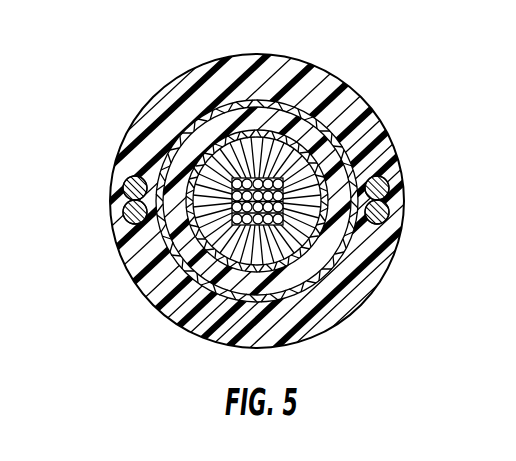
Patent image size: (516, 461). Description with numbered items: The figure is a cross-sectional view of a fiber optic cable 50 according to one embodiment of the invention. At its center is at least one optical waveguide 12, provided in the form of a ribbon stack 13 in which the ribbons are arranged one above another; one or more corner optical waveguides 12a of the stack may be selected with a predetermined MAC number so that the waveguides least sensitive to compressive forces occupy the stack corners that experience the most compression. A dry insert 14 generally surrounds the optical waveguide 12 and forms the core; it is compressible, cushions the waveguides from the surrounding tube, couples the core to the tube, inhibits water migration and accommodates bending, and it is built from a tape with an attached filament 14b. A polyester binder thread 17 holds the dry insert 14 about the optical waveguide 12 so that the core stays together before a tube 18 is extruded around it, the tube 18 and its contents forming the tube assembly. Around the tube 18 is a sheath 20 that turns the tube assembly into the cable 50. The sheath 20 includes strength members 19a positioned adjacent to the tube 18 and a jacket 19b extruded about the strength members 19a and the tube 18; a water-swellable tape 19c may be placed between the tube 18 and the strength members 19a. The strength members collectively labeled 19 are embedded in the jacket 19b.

The cable 50 is at (180, 68).
The sheath 20 is at (145, 118).
The optical waveguide 12 is at (330, 300).
The corner optical waveguide 12a is at (232, 221).
The ribbon stack 13 is at (353, 111).
The dry insert 14 is at (275, 173).
The filament 14b is at (515, 3).
The polyester binder thread 17 is at (254, 100).
The tube 18 is at (310, 108).
The strength member 19 is at (177, 325).
The strength members 19a is at (120, 174).
The jacket 19b is at (140, 260).
The water-swellable tape 19c is at (352, 273).